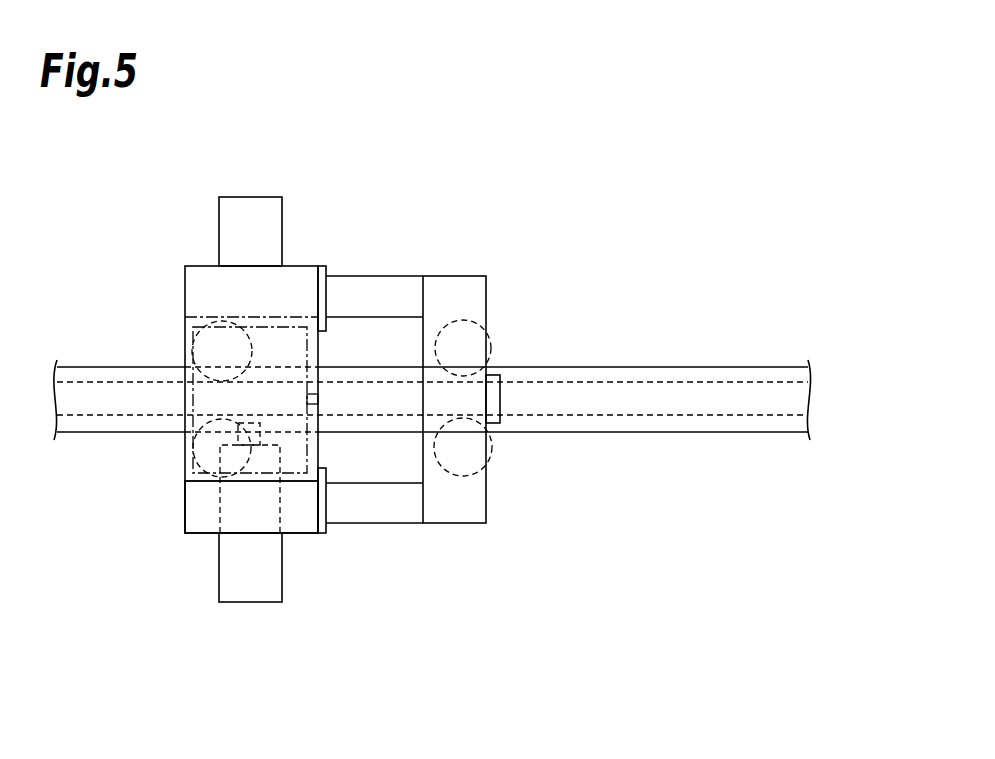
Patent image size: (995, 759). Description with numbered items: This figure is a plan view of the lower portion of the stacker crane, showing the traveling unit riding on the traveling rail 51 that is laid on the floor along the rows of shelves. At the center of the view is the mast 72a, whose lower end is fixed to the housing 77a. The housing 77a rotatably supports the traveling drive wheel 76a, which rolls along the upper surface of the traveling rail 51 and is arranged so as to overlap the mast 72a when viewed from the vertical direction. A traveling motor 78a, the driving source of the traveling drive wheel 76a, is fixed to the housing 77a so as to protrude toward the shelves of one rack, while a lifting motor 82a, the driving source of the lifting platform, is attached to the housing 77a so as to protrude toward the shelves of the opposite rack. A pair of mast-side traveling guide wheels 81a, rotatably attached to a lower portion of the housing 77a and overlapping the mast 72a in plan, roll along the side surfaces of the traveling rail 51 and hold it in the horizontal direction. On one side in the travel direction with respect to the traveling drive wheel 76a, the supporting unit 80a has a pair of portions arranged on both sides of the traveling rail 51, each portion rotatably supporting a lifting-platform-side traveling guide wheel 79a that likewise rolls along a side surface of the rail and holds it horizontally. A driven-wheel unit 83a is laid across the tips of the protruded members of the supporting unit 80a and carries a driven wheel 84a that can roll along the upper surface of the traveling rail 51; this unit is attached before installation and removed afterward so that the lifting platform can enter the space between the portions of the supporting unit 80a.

The traveling rail 51 is at (716, 397).
The mast 72a is at (205, 317).
The housing 77a is at (205, 523).
The lifting motor 82a is at (258, 227).
The traveling motor 78a is at (250, 585).
The mast-side traveling guide wheel 81a is at (188, 345).
The traveling drive wheel 76a is at (287, 423).
The supporting unit 80a is at (383, 302).
The driven-wheel unit 83a is at (462, 265).
The lifting-platform-side traveling guide wheel 79a is at (493, 357).
The driven wheel 84a is at (492, 400).